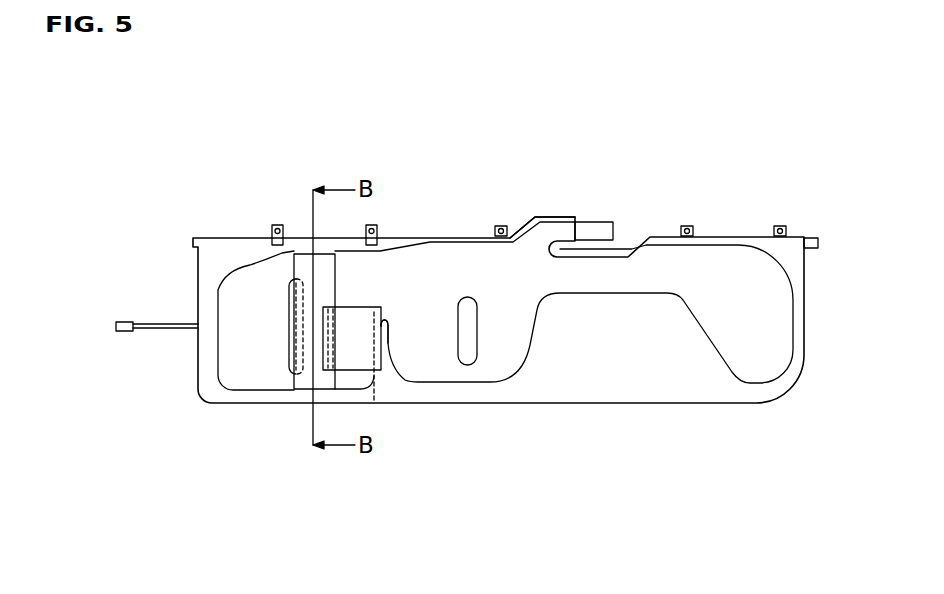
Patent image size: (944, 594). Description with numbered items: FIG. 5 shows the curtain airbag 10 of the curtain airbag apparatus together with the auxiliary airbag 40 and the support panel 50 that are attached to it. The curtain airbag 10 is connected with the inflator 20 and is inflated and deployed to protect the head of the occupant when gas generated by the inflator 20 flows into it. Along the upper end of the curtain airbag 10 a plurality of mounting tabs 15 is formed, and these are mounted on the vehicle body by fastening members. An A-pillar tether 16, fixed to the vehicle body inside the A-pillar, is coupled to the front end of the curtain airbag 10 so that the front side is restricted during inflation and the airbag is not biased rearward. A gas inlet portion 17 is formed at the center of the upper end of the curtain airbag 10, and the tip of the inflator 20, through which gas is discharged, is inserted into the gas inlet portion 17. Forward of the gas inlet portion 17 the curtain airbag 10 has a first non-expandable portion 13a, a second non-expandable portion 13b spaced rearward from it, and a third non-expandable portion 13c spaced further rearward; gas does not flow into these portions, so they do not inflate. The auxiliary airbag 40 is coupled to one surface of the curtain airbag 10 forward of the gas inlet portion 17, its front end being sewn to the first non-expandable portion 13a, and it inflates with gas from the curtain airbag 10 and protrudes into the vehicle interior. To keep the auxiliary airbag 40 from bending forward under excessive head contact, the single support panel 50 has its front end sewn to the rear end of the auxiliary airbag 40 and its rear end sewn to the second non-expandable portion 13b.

The curtain airbag 10 is at (798, 232).
The first non-expandable portion 13a is at (293, 328).
The second non-expandable portion 13b is at (388, 342).
The third non-expandable portion 13c is at (468, 323).
The mounting tabs 15 is at (276, 225).
The A-pillar tether 16 is at (148, 324).
The gas inlet portion 17 is at (552, 214).
The inflator 20 is at (597, 228).
The auxiliary airbag 40 is at (305, 265).
The support panel 50 is at (360, 323).